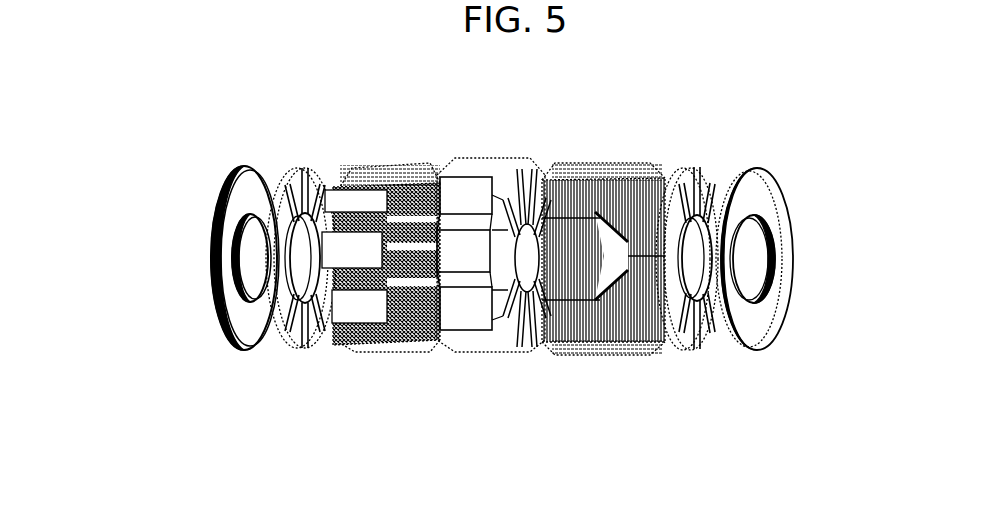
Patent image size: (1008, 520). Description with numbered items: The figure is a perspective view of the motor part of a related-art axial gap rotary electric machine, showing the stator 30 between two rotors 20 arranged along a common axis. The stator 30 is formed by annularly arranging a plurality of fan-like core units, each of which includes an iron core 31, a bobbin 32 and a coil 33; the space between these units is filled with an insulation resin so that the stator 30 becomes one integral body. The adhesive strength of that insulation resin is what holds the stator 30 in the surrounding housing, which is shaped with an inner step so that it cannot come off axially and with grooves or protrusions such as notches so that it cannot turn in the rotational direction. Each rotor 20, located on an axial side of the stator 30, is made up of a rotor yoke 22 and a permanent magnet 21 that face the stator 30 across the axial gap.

The rotor 20 is at (218, 162).
The permanent magnet 21 is at (299, 333).
The rotor yoke 22 is at (226, 268).
The stator 30 is at (348, 160).
The iron core 31 is at (393, 345).
The bobbin 32 is at (478, 342).
The coil 33 is at (592, 343).